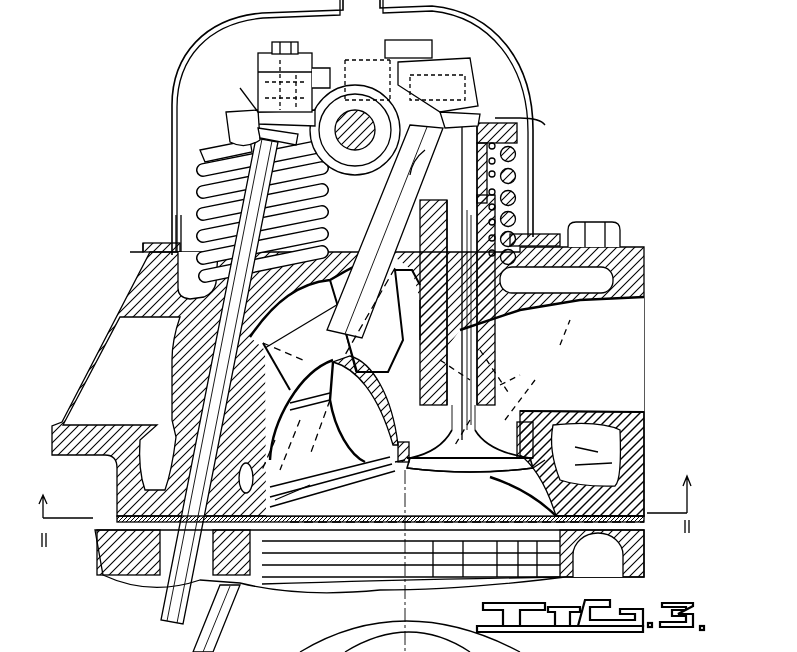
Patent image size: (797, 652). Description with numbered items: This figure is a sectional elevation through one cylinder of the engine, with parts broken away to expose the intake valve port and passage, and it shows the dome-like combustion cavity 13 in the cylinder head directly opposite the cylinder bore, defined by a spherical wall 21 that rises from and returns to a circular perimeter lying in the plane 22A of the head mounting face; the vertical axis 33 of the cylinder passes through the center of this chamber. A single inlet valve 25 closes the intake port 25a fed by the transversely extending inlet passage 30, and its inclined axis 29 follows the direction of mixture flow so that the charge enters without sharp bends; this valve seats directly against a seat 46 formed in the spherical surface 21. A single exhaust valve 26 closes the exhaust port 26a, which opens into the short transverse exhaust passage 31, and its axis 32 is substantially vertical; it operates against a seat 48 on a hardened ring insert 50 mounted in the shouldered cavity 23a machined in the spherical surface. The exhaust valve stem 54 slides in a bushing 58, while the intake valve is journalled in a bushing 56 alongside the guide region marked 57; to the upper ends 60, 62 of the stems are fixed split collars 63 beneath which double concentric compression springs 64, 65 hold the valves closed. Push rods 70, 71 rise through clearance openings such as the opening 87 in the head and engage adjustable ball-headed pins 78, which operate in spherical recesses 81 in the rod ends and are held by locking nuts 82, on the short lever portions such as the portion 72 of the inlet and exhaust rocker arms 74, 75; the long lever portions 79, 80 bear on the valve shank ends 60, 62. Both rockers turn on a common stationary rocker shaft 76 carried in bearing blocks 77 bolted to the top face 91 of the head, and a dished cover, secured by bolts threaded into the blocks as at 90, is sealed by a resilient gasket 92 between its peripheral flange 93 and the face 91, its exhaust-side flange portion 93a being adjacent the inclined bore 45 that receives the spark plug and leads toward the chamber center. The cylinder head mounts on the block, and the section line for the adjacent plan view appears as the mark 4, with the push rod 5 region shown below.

The section line 4- 4 is at (358, 520).
The push rod 5 is at (228, 625).
The combustion cavity 13 is at (448, 505).
The spherical wall 21 is at (318, 651).
The plane 22A is at (669, 504).
The machined cavity 23a is at (596, 465).
The inlet valve 25 is at (358, 490).
The intake port 25a is at (380, 440).
The exhaust valve 26 is at (520, 486).
The exhaust port 26a is at (372, 400).
The axis of the intake valve 29 is at (313, 406).
The inlet passage 30 is at (135, 384).
The exhaust passage 31 is at (622, 380).
The axis of the exhaust valve 32 is at (440, 316).
The vertical axis of the cylinder 33 is at (395, 600).
The inclined cylindrical bore 45 is at (600, 313).
The seat 46 is at (330, 501).
The seat 48 is at (588, 450).
The ring insert 50 is at (567, 463).
The exhaust valve stem 54 is at (500, 394).
The bushing 56 is at (375, 359).
The bore wall 57 is at (369, 354).
The bushing 58 is at (440, 327).
The upper end of intake valve stem 60 is at (235, 150).
The upper end of exhaust valve stem 62 is at (478, 125).
The split collar 63 is at (548, 122).
The compression spring 64 is at (516, 166).
The compression spring 65 is at (518, 179).
The push rod 70 is at (372, 213).
The push rod 71 is at (232, 357).
The short lever portion 72 is at (440, 130).
The inlet valve rocker arm 74 is at (228, 120).
The exhaust valve rocker arm 75 is at (258, 76).
The rocker shaft 76 is at (378, 168).
The bearing block 77 is at (352, 127).
The ball-headed pin 78 is at (338, 27).
The long lever portion 79 is at (236, 95).
The long lever portion 80 is at (438, 75).
The spherical recess 81 is at (255, 132).
The locking nut 82 is at (272, 50).
The clearance opening 87 is at (205, 404).
The bolt threading point 90 is at (375, 52).
The top face of the cylinder head 91 is at (605, 220).
The gasket 92 is at (150, 246).
The peripheral flange 93 is at (178, 235).
The flange portion 93a is at (566, 222).